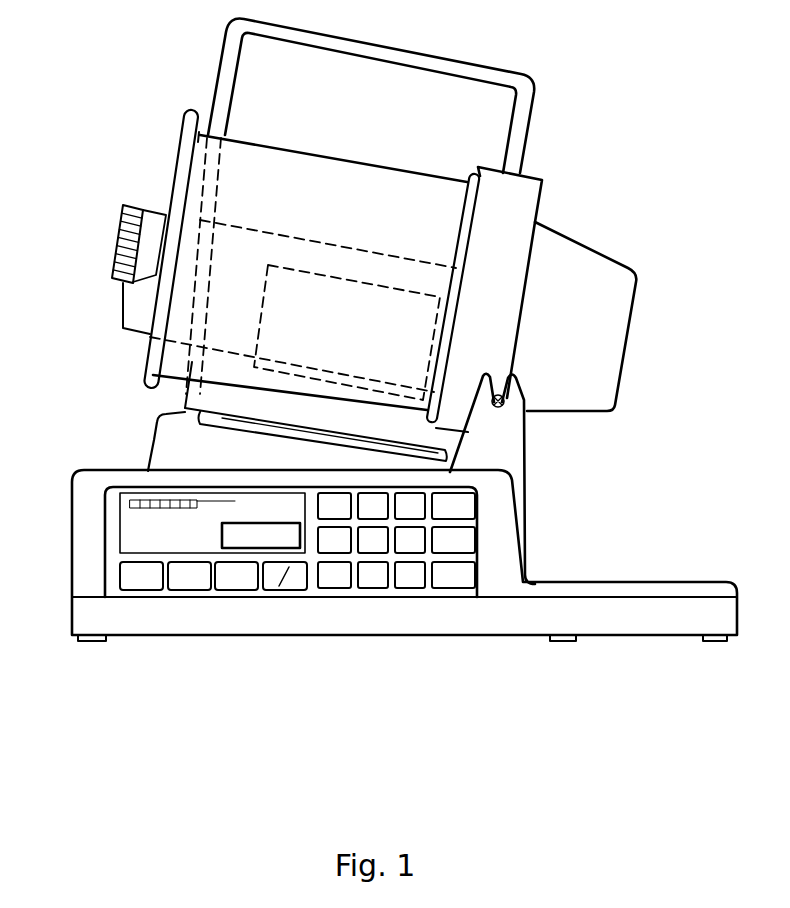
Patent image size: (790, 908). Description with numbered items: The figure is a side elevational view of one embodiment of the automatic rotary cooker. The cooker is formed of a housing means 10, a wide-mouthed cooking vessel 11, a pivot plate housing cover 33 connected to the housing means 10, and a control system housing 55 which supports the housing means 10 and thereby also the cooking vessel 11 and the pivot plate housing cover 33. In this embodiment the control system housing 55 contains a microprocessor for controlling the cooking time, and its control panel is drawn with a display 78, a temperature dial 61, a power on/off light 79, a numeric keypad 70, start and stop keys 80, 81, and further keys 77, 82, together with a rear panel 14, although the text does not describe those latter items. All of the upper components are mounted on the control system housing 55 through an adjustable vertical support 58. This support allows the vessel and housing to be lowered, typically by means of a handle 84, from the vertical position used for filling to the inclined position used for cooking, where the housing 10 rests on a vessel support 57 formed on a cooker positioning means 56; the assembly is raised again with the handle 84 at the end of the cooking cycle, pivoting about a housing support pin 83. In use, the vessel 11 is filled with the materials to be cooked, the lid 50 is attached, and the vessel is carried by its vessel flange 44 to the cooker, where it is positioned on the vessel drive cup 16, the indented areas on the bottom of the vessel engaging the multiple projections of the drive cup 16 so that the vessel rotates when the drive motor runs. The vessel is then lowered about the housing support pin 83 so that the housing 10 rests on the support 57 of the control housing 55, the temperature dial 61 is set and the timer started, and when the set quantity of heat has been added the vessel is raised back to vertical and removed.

The housing means 10 is at (520, 187).
The wide-mouthed cooking vessel 11 is at (293, 163).
The rear panel 14 is at (572, 255).
The vessel drive cup 16 is at (470, 173).
The pivot plate housing cover 33 is at (127, 233).
The vessel flange 44 is at (198, 108).
The lid 50 is at (145, 348).
The control system housing 55 is at (348, 623).
The cooker positioning means 56 is at (151, 457).
The vessel support 57 is at (203, 416).
The adjustable vertical support 58 is at (512, 458).
The temperature dial 61 is at (142, 590).
The numeric keypad 70 is at (417, 586).
The sequence cook key 77 is at (193, 590).
The display 78 is at (222, 535).
The power on/off light 79 is at (280, 590).
The start key 80 is at (467, 515).
The stop key 81 is at (467, 547).
The cook time key 82 is at (240, 590).
The housing support pin 83 is at (503, 408).
The handle 84 is at (453, 62).